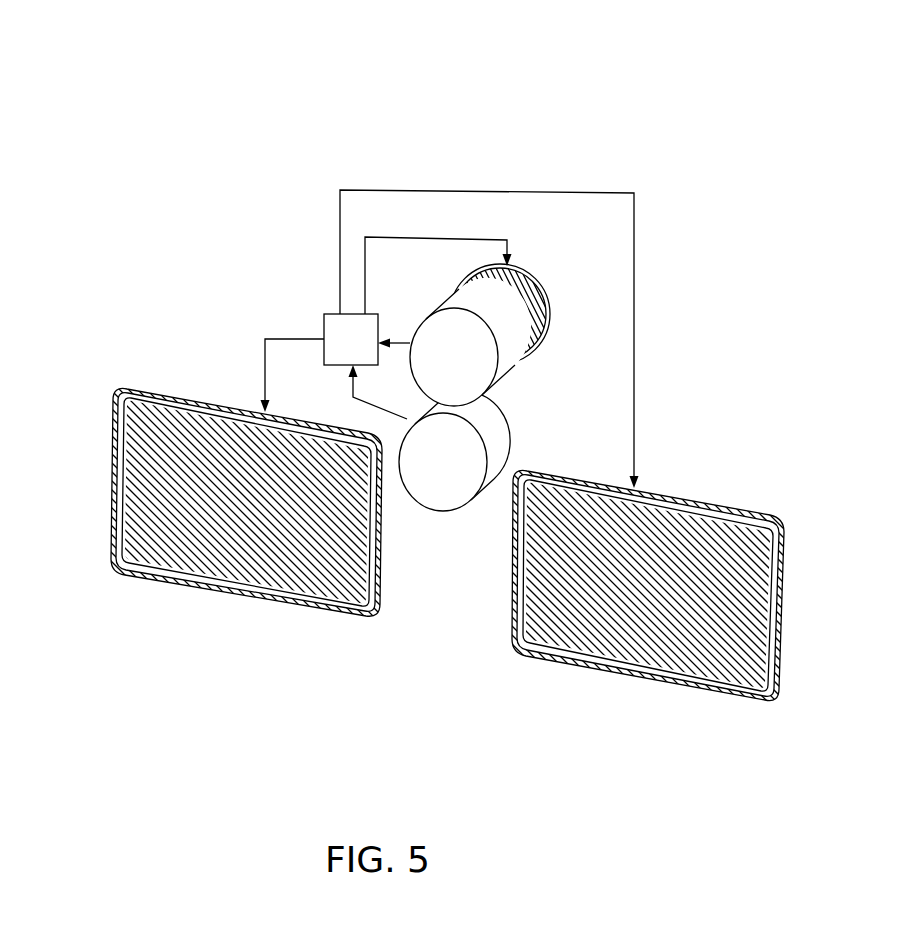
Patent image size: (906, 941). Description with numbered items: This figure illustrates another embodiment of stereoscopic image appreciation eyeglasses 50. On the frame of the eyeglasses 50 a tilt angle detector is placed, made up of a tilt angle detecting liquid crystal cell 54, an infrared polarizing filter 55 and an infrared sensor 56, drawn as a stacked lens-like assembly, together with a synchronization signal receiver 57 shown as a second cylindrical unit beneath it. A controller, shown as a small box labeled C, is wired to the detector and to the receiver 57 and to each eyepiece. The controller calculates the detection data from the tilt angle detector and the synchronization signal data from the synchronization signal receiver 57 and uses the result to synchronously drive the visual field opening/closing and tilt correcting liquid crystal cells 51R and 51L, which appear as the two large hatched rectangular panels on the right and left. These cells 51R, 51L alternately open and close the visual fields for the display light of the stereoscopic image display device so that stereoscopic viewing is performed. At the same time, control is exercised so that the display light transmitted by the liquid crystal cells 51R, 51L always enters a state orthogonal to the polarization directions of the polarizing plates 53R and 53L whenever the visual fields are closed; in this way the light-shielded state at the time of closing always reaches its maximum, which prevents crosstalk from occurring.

The stereoscopic image appreciation eyeglasses 50 is at (149, 165).
The visual field opening/closing and tilt correcting liquid crystal cell 51L is at (175, 388).
The polarizing plate 53L is at (105, 567).
The visual field opening/closing and tilt correcting liquid crystal cell 51R is at (706, 498).
The polarizing plate 53R is at (508, 650).
The tilt angle detecting liquid crystal cell 54 is at (548, 300).
The infrared polarizing filter 55 is at (533, 326).
The infrared sensor 56 is at (508, 362).
The synchronization signal receiver 57 is at (503, 450).